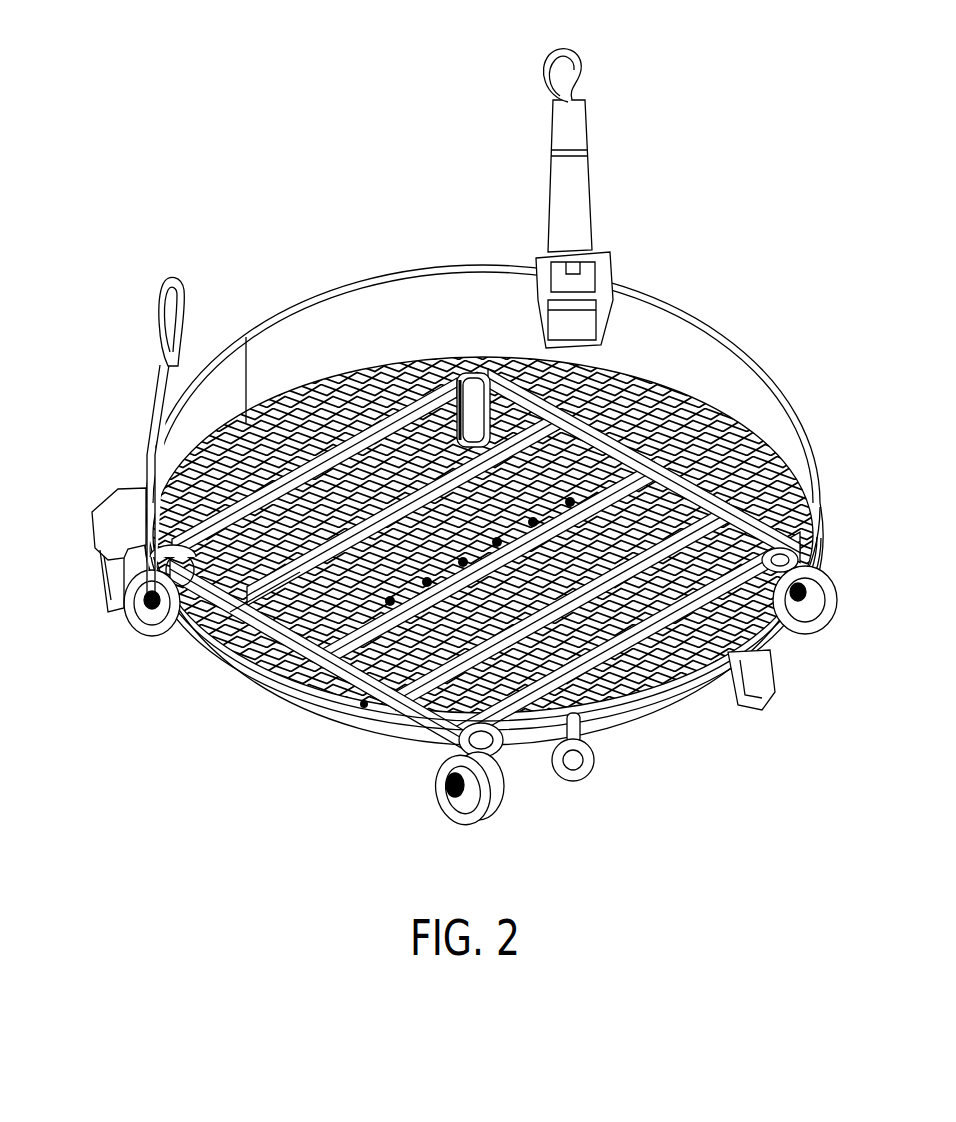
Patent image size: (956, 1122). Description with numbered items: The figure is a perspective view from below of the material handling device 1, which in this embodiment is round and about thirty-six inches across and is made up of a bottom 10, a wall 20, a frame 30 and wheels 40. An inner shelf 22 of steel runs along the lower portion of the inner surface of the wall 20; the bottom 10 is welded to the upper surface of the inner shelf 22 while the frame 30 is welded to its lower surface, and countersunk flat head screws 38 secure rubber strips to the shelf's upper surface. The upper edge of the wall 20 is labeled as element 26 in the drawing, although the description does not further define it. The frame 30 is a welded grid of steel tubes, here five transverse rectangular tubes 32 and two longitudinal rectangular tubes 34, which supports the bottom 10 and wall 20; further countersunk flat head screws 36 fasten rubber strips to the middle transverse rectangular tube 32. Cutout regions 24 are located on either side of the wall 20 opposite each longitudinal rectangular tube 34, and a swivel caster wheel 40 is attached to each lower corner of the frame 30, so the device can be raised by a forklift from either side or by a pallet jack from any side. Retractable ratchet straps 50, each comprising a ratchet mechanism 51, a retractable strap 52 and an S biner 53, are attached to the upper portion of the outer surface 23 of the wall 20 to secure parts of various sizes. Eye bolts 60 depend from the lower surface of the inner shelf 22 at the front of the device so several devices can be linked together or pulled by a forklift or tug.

The material handling device 1 is at (692, 80).
The bottom 10 is at (652, 404).
The wall 20 is at (268, 289).
The inner shelf 22 is at (651, 693).
The outer surface 23 is at (329, 360).
The cutout region 24 is at (460, 376).
The rim 26 is at (486, 288).
The frame 30 is at (702, 430).
The transverse rectangular tube 32 is at (718, 672).
The longitudinal rectangular tube 34 is at (270, 606).
The countersunk flat head screw 36 is at (364, 706).
The countersunk flat head screw 38 is at (392, 607).
The wheel 40 is at (440, 376).
The retractable ratchet strap 50 is at (604, 242).
The ratchet mechanism 51 is at (613, 280).
The retractable strap 52 is at (588, 152).
The S biner 53 is at (576, 62).
The eye bolt 60 is at (588, 770).